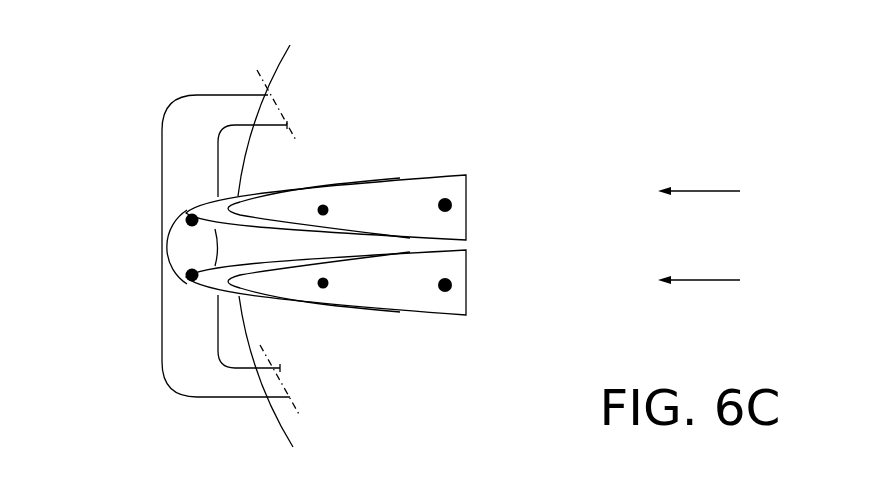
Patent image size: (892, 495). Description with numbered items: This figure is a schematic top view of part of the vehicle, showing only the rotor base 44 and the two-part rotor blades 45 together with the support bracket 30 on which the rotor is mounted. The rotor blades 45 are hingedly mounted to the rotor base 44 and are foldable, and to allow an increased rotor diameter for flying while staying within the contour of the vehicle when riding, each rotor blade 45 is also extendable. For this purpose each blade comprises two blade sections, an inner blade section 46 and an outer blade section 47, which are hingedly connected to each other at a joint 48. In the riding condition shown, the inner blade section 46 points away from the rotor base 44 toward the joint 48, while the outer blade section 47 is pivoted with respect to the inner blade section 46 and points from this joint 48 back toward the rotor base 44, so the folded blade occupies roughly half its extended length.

The support bracket 30 is at (162, 135).
The rotor base 44 is at (163, 227).
The rotor blade 45 is at (718, 230).
The inner blade section 46 is at (273, 243).
The outer blade section 47 is at (323, 210).
The joint 48 is at (462, 202).